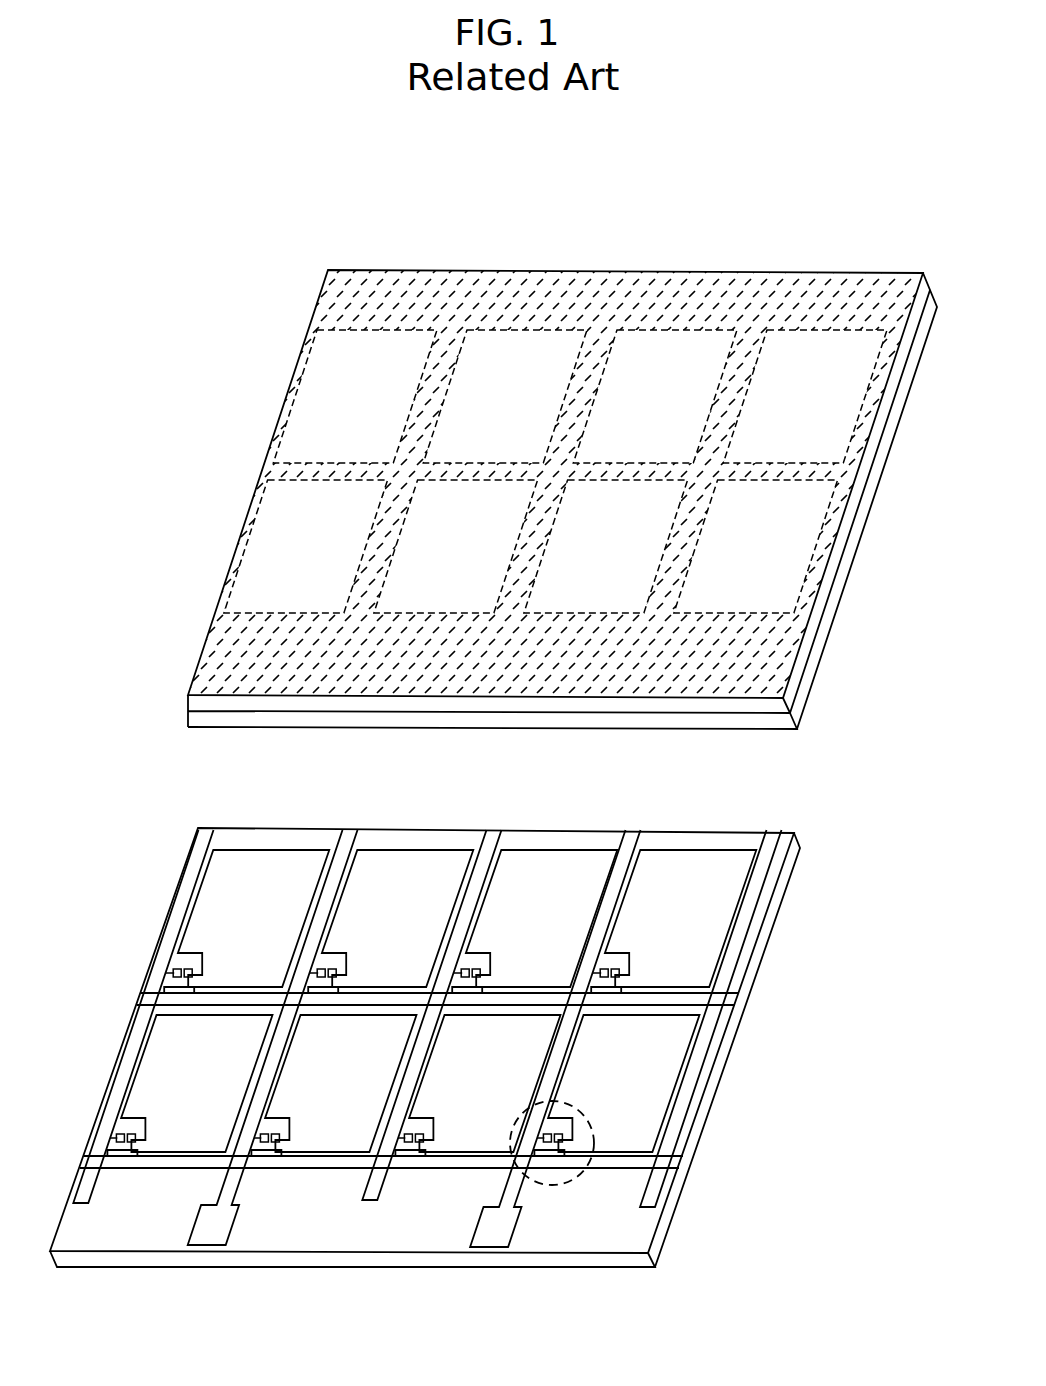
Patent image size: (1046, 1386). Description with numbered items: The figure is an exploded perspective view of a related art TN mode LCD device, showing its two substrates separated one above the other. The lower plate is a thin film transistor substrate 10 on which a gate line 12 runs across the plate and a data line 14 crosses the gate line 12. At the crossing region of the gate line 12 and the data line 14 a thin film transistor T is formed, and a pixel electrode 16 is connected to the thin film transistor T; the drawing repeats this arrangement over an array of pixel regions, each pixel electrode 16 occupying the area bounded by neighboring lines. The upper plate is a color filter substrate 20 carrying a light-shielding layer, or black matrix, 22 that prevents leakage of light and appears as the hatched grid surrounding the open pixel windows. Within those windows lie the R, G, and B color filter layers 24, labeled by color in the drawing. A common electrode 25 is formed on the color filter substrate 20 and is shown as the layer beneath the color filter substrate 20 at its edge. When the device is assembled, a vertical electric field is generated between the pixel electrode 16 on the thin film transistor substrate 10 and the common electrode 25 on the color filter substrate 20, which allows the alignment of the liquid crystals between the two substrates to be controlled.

The thin film transistor substrate 10 is at (648, 1268).
The gate line 12 is at (662, 1165).
The data line 14 is at (510, 1190).
The pixel electrode 16 is at (665, 1100).
The thin film transistor T is at (550, 1185).
The color filter substrate 20 is at (775, 706).
The light-shielding layer 22 is at (850, 470).
The color filter layers 24 is at (620, 370).
The common electrode 25 is at (778, 722).